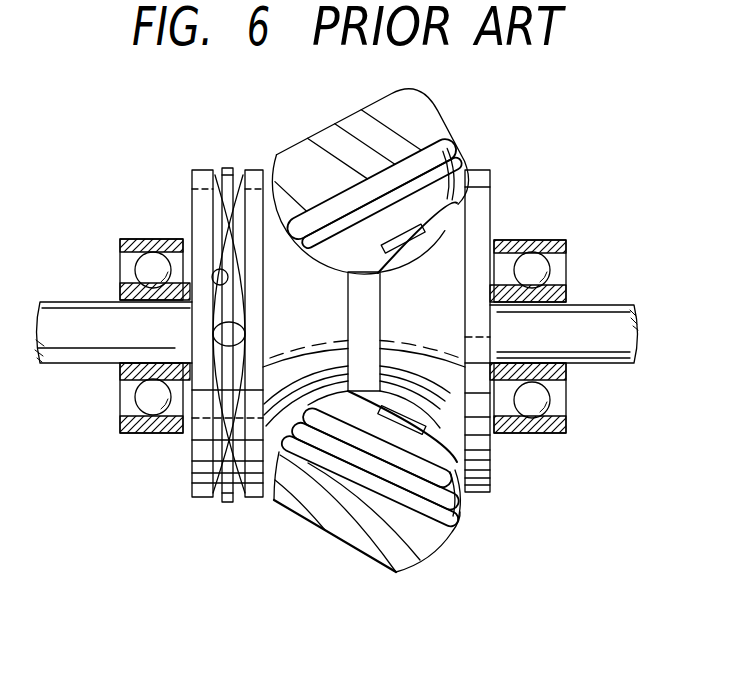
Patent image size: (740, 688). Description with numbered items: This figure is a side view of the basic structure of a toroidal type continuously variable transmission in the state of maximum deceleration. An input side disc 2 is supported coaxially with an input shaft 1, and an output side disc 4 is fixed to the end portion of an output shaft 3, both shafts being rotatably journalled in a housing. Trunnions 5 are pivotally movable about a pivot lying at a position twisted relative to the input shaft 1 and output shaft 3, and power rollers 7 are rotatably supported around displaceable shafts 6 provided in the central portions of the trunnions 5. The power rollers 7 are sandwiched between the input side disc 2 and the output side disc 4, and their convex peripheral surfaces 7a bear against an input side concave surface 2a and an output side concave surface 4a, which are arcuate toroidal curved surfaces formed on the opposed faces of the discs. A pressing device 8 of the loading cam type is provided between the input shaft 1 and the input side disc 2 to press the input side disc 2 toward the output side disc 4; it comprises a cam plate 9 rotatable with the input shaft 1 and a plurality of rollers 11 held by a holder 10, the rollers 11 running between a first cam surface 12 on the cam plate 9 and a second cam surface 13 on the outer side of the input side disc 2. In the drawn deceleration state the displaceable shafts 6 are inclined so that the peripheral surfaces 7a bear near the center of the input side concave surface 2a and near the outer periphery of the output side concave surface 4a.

The input shaft 1 is at (67, 337).
The input side disc 2 is at (252, 180).
The input side concave surface 2a is at (308, 418).
The output shaft 3 is at (590, 345).
The output side disc 4 is at (490, 176).
The output side concave surface 4a is at (403, 257).
The trunnion 5 is at (413, 107).
The displaceable shaft 6 is at (422, 237).
The power roller 7 is at (467, 193).
The peripheral surface 7a is at (458, 165).
The pressing device 8 is at (166, 334).
The cam plate 9 is at (198, 500).
The holder 10 is at (227, 503).
The roller 11 is at (213, 328).
The first cam surface 12 is at (213, 252).
The second cam surface 13 is at (213, 215).